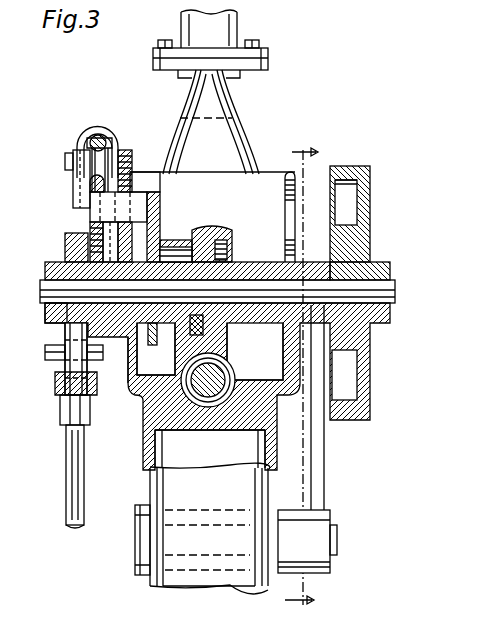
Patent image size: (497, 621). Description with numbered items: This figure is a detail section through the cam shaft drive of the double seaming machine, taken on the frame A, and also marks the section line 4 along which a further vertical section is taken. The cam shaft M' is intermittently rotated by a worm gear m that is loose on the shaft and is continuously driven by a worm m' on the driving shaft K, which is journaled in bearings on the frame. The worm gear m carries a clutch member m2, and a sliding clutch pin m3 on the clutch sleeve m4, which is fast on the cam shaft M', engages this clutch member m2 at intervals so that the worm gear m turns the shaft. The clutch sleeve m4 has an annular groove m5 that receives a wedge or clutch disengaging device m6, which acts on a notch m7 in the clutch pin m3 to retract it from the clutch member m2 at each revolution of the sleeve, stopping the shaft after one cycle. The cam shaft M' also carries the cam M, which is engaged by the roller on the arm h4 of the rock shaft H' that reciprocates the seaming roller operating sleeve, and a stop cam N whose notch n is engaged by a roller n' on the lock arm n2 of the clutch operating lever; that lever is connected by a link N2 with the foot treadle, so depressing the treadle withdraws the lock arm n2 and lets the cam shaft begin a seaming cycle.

The section line 4— 4 is at (295, 371).
The worm gear m is at (217, 243).
The worm m' is at (222, 375).
The clutch member m2 is at (190, 235).
The clutch pin m3 is at (166, 244).
The clutch sleeve m4 is at (168, 343).
The annular groove m5 is at (152, 342).
The clutch disengaging device m6 is at (154, 188).
The notch m7 is at (150, 258).
The cam M is at (352, 368).
The cam shaft M' is at (228, 273).
The stop cam N is at (64, 240).
The notch n is at (41, 318).
The roller n' is at (58, 369).
The lock arm n2 is at (60, 403).
The link N2 is at (68, 482).
The driving shaft K is at (214, 398).
The frame A is at (181, 584).
The arm h4 is at (325, 448).
The rock shaft H' is at (330, 541).